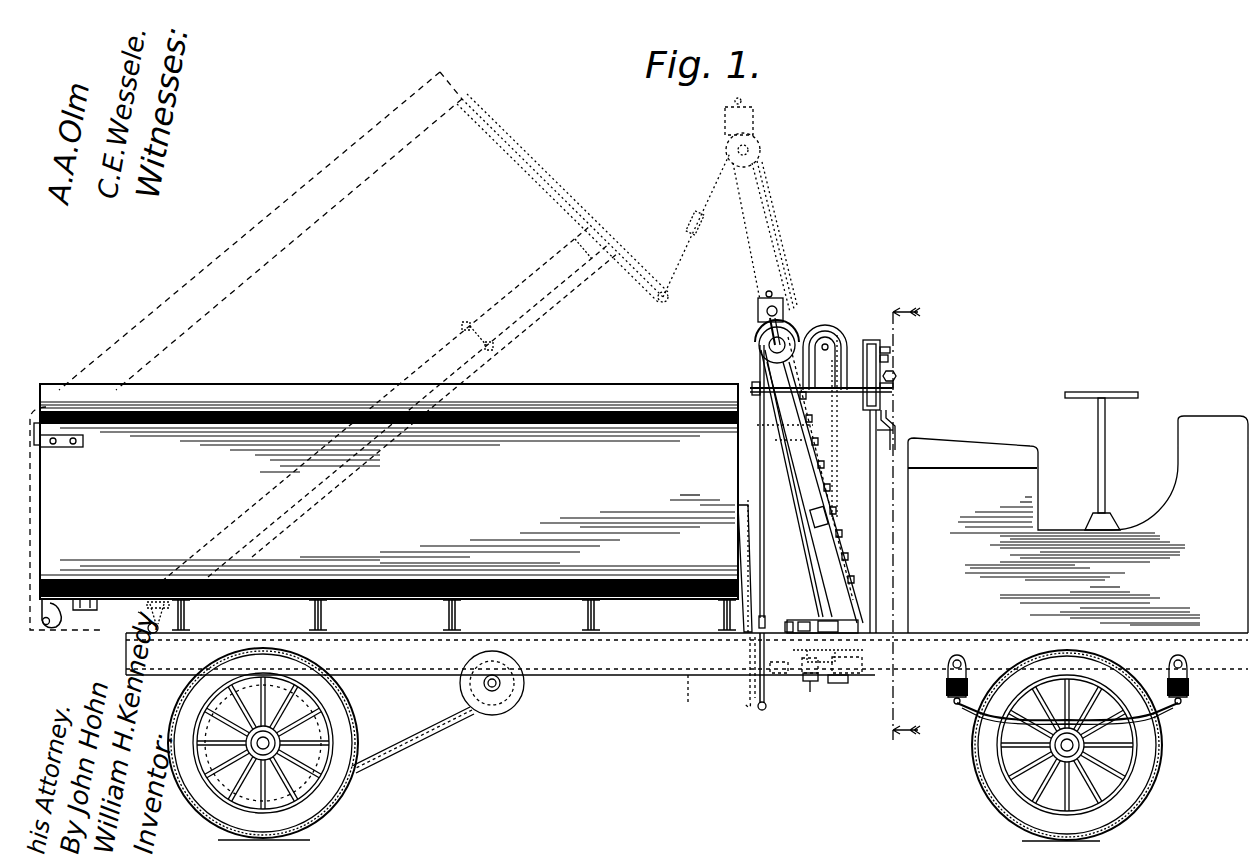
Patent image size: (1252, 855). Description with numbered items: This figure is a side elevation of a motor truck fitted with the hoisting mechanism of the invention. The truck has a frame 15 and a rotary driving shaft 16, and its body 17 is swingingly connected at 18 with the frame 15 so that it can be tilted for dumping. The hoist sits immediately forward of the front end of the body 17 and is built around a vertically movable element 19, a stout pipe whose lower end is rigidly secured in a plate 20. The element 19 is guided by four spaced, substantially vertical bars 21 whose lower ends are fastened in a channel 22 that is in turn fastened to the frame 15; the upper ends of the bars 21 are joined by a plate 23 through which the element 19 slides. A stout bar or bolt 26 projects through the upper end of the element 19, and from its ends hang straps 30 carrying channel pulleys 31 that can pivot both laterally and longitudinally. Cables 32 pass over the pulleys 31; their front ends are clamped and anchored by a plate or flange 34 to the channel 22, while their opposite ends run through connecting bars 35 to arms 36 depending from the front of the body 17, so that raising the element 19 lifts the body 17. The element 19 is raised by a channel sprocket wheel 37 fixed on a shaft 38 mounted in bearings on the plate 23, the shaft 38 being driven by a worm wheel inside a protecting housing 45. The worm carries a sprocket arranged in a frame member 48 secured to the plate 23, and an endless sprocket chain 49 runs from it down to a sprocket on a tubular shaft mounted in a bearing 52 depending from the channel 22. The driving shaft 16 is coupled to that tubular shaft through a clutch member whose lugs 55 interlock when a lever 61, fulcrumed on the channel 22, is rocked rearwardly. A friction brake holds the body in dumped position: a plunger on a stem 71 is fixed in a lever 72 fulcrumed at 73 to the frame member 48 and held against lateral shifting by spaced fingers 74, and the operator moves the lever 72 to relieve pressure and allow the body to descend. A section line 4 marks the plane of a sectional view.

The section line 4 is at (899, 522).
The frame 15 is at (628, 660).
The rotary driving shaft 16 is at (693, 698).
The body 17 is at (508, 152).
The swinging connection 18 is at (138, 617).
The vertically movable element 19 is at (778, 232).
The plate 20 is at (795, 620).
The bars 21 is at (784, 456).
The channel 22 is at (785, 627).
The plate 23 is at (792, 483).
The bar or bolt 26 is at (785, 306).
The straps 30 is at (758, 140).
The channel pulleys 31 is at (826, 410).
The cables 32 is at (712, 187).
The plate or flange 34 is at (858, 597).
The connecting bars 35 is at (690, 236).
The arms 36 is at (744, 706).
The channel sprocket wheel 37 is at (828, 345).
The shaft 38 is at (877, 365).
The protecting housing 45 is at (832, 344).
The frame member 48 is at (890, 350).
The endless sprocket chain 49 is at (893, 430).
The bearing 52 is at (847, 683).
The lugs 55 is at (816, 681).
The lever 61 is at (877, 566).
The stem 71 is at (896, 376).
The lever 72 is at (890, 410).
The fulcrum 73 is at (888, 359).
The spaced fingers 74 is at (893, 389).